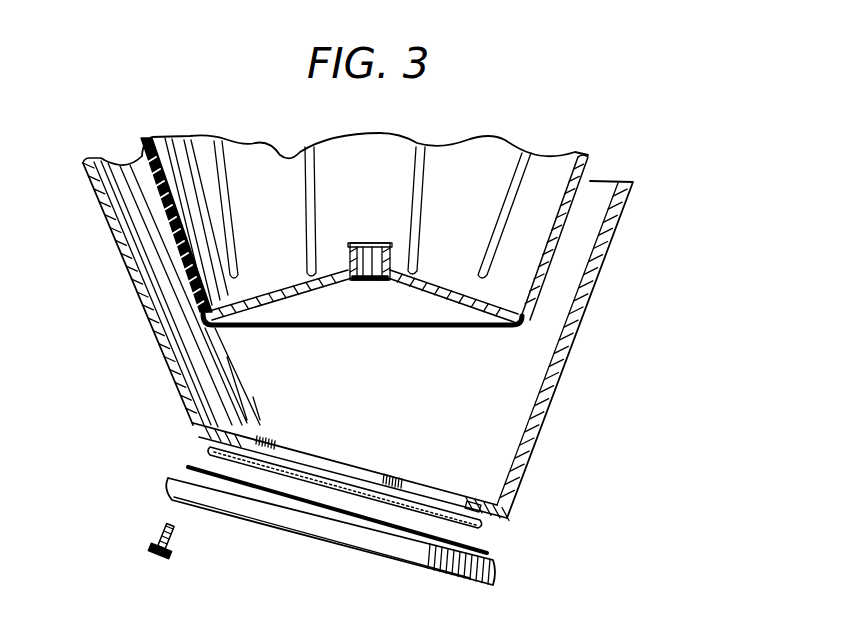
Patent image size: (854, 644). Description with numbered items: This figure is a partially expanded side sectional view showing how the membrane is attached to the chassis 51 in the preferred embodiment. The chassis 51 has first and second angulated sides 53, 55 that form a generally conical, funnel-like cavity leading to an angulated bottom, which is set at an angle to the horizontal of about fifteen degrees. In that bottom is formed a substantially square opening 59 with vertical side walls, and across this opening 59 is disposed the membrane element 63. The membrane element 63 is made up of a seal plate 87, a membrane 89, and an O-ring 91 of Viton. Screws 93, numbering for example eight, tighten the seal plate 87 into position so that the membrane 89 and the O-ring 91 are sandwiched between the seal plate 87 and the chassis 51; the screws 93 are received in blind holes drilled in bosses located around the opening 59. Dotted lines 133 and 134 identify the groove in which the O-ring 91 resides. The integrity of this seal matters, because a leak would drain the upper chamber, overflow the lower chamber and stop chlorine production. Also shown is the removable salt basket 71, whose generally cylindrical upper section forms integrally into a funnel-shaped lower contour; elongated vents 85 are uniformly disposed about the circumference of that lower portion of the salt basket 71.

The chassis 51 is at (576, 370).
The first angulated side 53 is at (608, 255).
The second angulated side 55 is at (132, 277).
The square opening 59 is at (357, 450).
The membrane element 63 is at (171, 424).
The salt basket 71 is at (541, 144).
The elongated vents 85 is at (300, 163).
The seal plate 87 is at (350, 553).
The membrane 89 is at (487, 553).
The O-ring 91 is at (476, 523).
The screws 93 is at (176, 541).
The dotted line 133 is at (483, 436).
The dotted line 134 is at (436, 456).